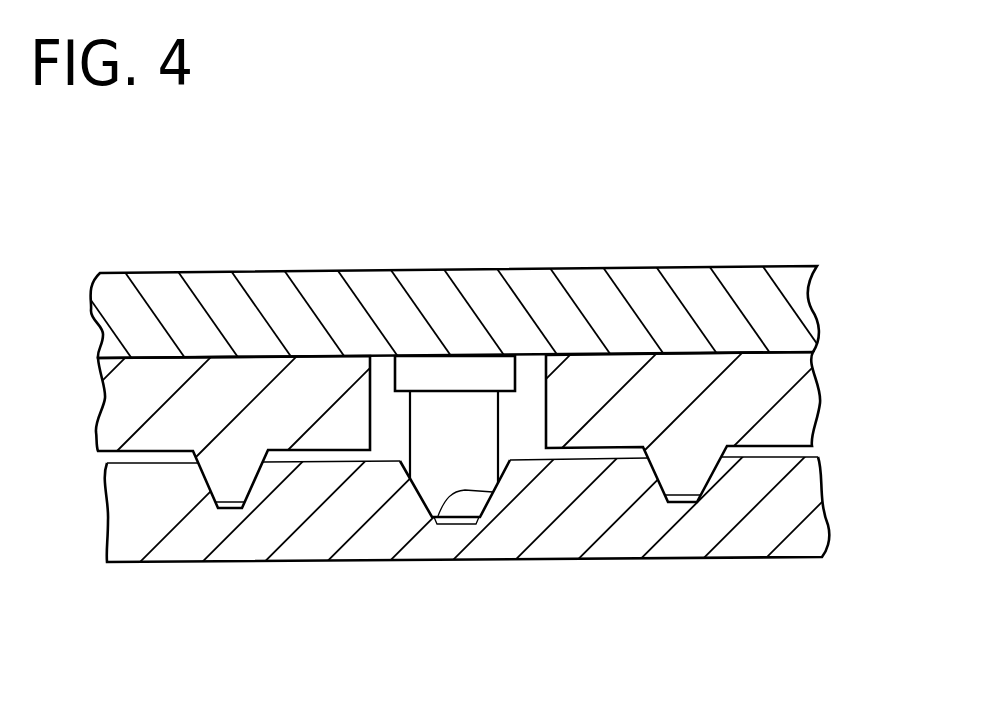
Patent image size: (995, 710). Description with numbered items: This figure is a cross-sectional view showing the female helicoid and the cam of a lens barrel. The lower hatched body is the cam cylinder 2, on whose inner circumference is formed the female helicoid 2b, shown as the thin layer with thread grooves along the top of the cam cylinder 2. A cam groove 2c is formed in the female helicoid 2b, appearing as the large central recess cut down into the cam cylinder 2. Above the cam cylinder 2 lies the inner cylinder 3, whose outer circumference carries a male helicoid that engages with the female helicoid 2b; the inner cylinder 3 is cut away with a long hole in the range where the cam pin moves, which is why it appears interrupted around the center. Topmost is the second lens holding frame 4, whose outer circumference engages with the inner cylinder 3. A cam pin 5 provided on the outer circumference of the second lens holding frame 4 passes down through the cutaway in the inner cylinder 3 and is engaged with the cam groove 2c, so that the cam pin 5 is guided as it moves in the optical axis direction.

The second lens holding frame 4 is at (474, 267).
The inner cylinder 3 is at (658, 351).
The cam pin 5 is at (498, 414).
The cam cylinder 2 is at (523, 560).
The female helicoid 2b is at (661, 483).
The cam groove 2c is at (437, 516).